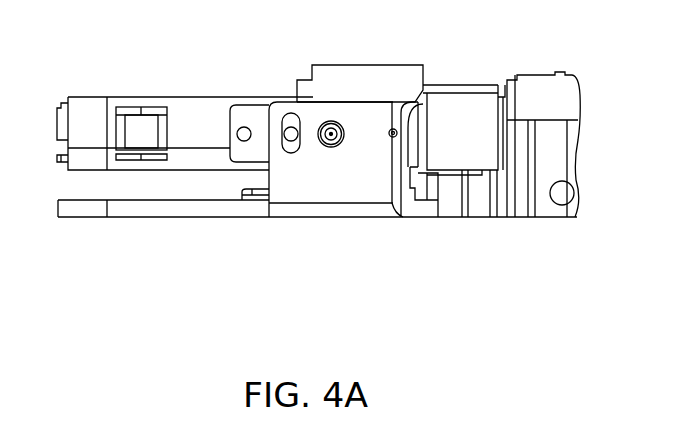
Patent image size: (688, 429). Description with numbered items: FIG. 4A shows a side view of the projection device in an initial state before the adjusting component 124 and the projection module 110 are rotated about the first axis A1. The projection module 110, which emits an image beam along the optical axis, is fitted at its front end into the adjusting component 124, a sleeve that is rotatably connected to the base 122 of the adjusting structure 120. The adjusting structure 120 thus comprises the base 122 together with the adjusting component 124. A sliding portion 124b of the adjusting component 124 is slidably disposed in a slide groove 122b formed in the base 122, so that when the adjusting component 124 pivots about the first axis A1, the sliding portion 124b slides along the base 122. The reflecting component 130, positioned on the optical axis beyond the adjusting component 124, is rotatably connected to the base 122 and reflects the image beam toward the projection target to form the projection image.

The projection module 110 is at (200, 112).
The adjusting structure 120 is at (383, 278).
The base 122 is at (305, 190).
The slide groove 122b is at (338, 115).
The adjusting component 124 is at (362, 95).
The sliding portion 124b is at (320, 130).
The first axis A1 is at (392, 128).
The reflecting component 130 is at (460, 108).